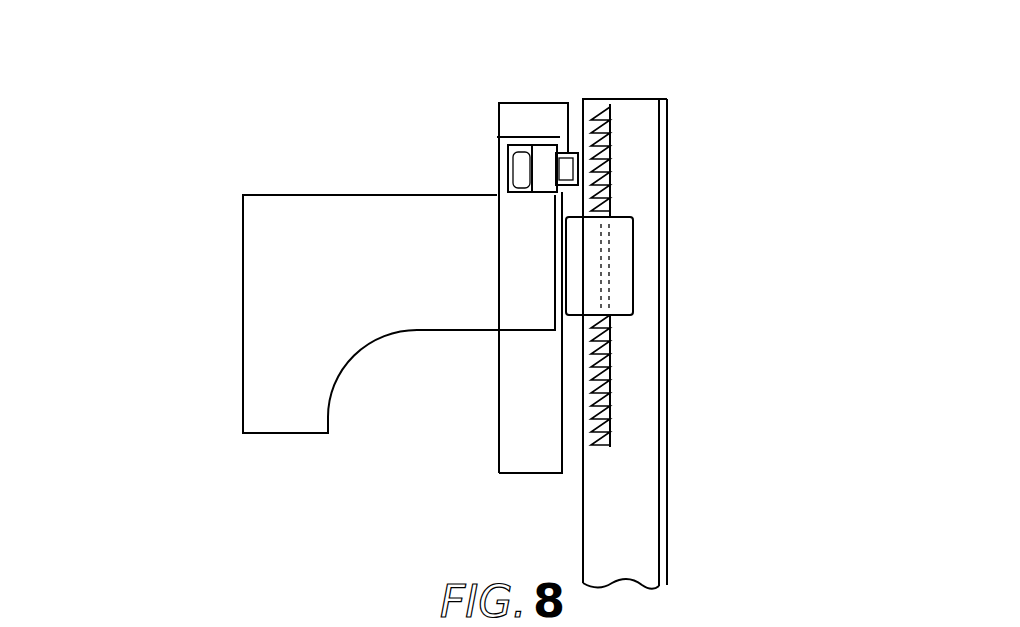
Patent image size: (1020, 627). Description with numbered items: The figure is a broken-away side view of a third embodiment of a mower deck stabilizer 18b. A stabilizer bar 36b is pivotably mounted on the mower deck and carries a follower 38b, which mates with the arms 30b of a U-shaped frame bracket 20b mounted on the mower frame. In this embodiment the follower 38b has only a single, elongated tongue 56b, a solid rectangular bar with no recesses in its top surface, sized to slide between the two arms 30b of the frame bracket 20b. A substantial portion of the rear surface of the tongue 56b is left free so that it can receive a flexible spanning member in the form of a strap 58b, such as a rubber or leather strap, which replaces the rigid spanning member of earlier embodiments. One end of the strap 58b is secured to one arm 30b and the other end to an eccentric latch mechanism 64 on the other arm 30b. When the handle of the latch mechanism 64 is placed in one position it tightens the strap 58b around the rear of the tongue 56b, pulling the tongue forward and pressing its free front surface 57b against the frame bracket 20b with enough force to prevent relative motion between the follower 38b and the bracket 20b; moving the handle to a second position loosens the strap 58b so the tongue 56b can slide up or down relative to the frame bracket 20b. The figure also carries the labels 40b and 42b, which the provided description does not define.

The mower deck stabilizer 18b is at (745, 120).
The frame bracket 20b is at (232, 268).
The arms 30b is at (523, 258).
The stabilizer bar 36b is at (676, 195).
The follower 38b is at (648, 287).
The rack teeth 40b is at (602, 381).
The rack backbone 42b is at (612, 410).
The tongue 56b is at (518, 435).
The free front surface 57b is at (500, 360).
The strap 58b is at (572, 153).
The eccentric latch mechanism 64 is at (528, 185).